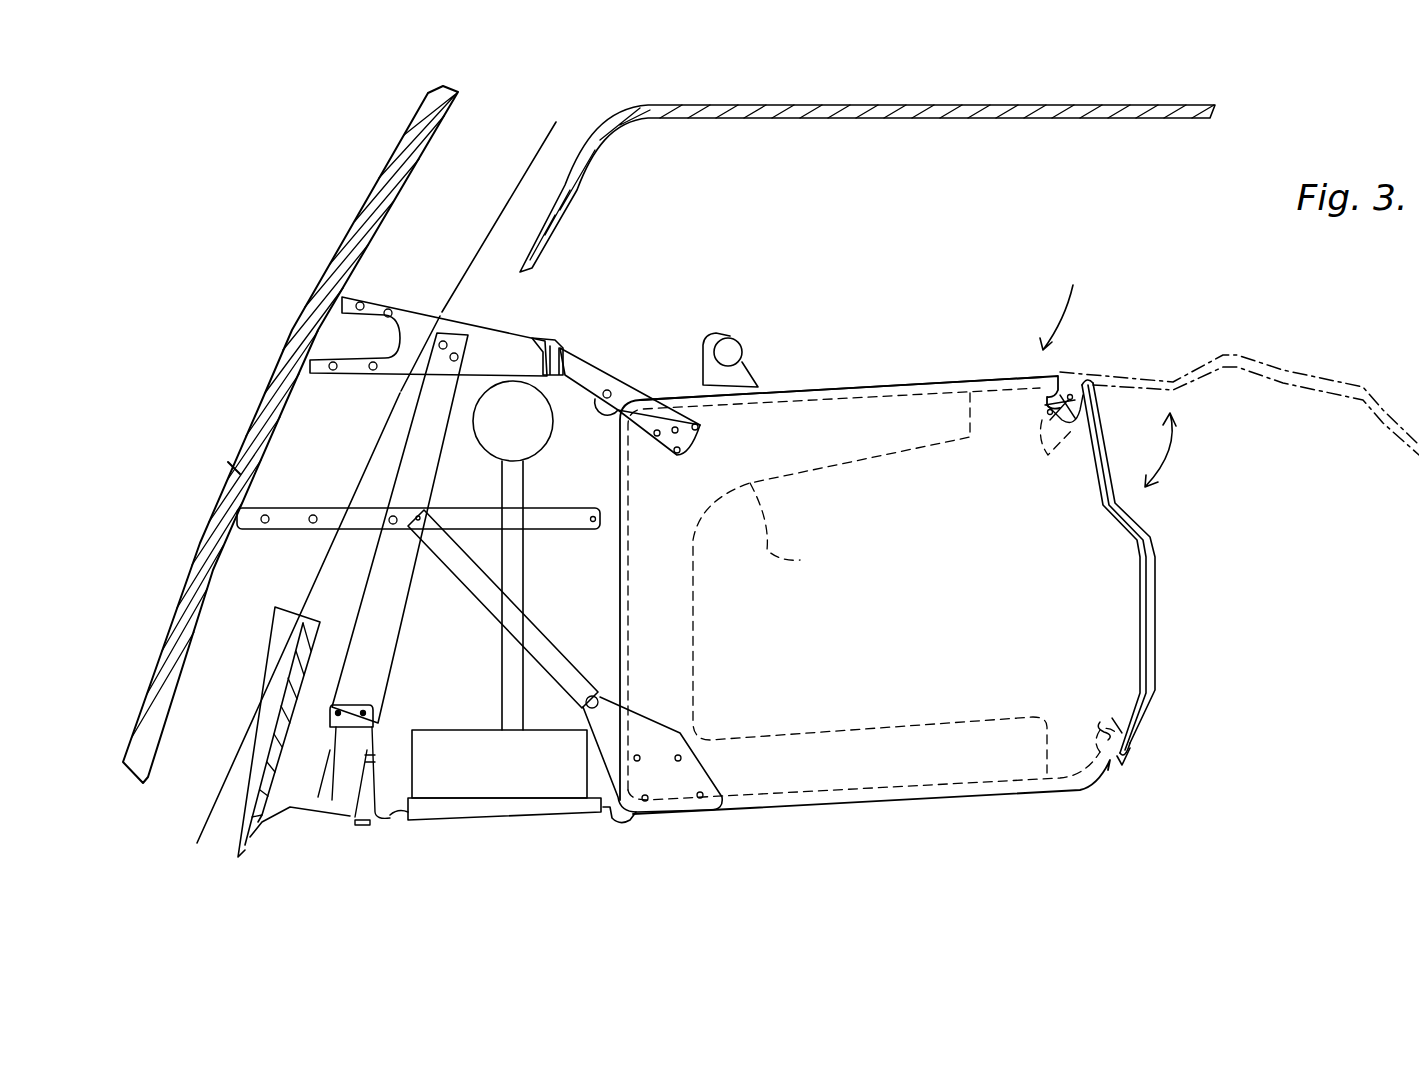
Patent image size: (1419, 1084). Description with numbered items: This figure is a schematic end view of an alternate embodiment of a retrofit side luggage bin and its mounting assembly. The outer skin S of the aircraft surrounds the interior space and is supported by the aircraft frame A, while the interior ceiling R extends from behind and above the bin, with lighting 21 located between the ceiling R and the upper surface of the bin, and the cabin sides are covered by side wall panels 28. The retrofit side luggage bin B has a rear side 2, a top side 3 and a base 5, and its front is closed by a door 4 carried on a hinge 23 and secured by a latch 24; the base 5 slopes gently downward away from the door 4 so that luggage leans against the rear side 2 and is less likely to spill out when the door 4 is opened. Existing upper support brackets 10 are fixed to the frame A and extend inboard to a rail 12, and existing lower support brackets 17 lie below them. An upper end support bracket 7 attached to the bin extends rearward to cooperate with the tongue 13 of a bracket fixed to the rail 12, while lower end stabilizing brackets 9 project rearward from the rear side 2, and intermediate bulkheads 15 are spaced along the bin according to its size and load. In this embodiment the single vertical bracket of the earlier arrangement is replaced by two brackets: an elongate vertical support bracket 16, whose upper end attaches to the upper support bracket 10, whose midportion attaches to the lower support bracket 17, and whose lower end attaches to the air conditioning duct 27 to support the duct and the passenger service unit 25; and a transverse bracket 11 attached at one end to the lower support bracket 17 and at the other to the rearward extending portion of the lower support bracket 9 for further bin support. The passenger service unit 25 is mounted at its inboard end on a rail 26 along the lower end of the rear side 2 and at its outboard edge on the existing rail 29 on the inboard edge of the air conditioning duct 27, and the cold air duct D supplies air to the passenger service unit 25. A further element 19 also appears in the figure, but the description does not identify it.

The rear side 2 is at (630, 640).
The top side 3 is at (845, 388).
The door 4 is at (1155, 610).
The base 5 is at (950, 795).
The upper end support bracket 7 is at (632, 392).
The lower end stabilizing bracket 9 is at (670, 790).
The upper support bracket 10 is at (418, 300).
The transverse bracket 11 is at (555, 660).
The rail 12 is at (550, 338).
The tongue 13 is at (580, 370).
The intermediate bulkhead 15 is at (790, 560).
The elongate vertical support bracket 16 is at (388, 605).
The lower support bracket 17 is at (540, 530).
The lower latch striker 19 is at (1163, 727).
The lighting 21 is at (745, 340).
The hinge 23 is at (1048, 445).
The latch 24 is at (1118, 696).
The passenger service unit 25 is at (525, 785).
The rail 26 is at (618, 822).
The air conditioning duct 27 is at (380, 745).
The side wall panels 28 is at (272, 805).
The existing rail 29 is at (395, 820).
The aircraft frame A is at (388, 236).
The retrofit side luggage bin B is at (1108, 369).
The cold air duct D is at (513, 555).
The interior ceiling R is at (772, 112).
The outer skin S is at (235, 468).